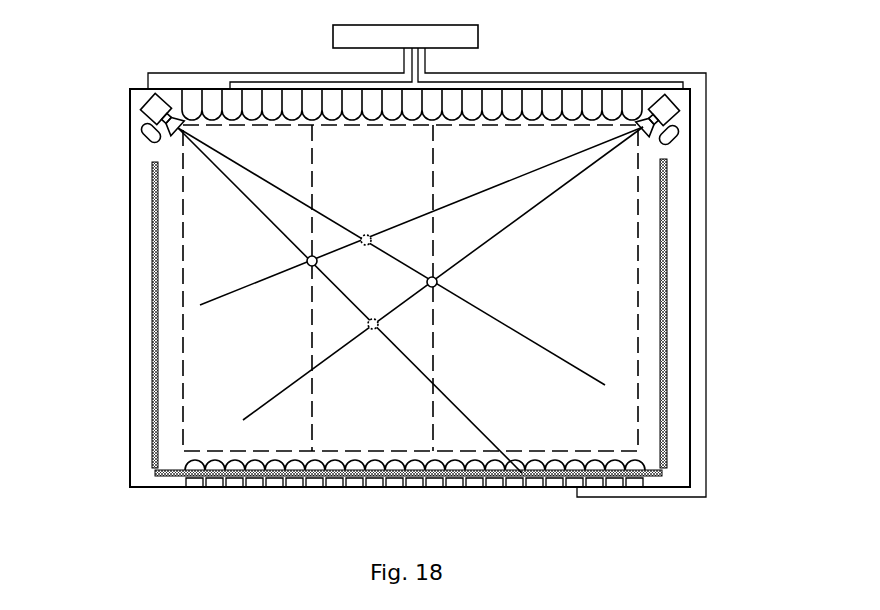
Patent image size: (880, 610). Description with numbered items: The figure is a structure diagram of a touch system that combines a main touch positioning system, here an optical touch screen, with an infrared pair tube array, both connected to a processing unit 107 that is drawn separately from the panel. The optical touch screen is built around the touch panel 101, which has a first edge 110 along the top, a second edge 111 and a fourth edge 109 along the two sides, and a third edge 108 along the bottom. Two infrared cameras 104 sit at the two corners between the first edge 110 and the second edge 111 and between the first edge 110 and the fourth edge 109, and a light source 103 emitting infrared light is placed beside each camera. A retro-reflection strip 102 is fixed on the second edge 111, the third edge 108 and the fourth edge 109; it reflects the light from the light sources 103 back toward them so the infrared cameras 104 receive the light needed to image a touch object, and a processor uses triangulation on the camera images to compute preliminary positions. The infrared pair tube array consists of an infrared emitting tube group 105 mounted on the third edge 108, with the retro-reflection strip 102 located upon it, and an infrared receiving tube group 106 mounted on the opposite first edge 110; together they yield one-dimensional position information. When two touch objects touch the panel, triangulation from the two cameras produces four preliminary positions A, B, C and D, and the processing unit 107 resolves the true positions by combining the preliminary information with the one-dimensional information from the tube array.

The touch panel 101 is at (242, 320).
The retro-reflection strip 102 is at (152, 234).
The light source 103 is at (148, 132).
The infrared camera 104 is at (156, 104).
The infrared emitting tube group 105 is at (269, 487).
The infrared receiving tube group 106 is at (570, 92).
The processing unit 107 is at (404, 37).
The third edge 108 is at (624, 487).
The fourth edge 109 is at (130, 372).
The first edge 110 is at (165, 89).
The second edge 111 is at (706, 294).
The preliminary position point A is at (299, 261).
The preliminary position point B is at (442, 283).
The preliminary position point C is at (364, 230).
The preliminary position point D is at (372, 335).